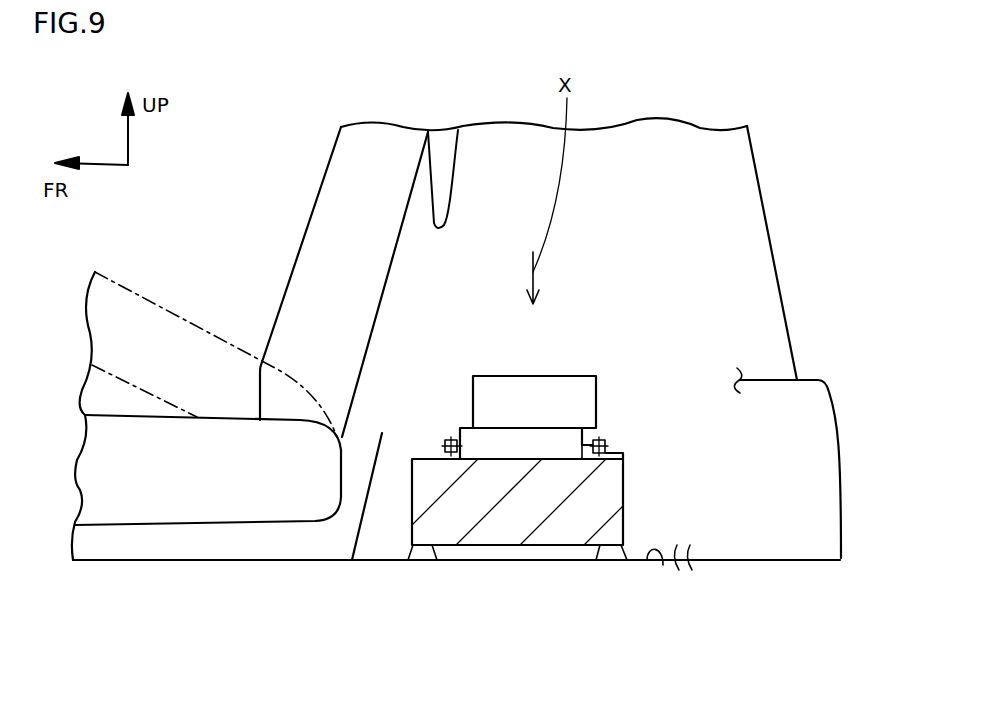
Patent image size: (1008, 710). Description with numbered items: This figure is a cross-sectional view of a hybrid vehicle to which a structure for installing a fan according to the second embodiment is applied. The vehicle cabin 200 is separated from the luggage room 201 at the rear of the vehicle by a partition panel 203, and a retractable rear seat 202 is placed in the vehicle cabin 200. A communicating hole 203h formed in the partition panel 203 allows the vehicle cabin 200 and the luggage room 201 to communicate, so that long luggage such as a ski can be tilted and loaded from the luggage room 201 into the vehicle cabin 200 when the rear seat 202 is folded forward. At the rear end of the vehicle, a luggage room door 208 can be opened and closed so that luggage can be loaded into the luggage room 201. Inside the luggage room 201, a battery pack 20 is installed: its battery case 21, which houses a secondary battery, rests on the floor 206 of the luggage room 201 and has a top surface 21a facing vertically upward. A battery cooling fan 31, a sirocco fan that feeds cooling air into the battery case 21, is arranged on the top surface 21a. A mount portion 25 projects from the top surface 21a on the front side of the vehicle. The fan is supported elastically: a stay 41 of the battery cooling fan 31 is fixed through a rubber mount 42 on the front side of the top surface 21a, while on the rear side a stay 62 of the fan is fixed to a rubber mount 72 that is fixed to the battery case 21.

The vehicle cabin 200 is at (242, 172).
The luggage room 201 is at (690, 288).
The rear seat 202 is at (323, 250).
The partition panel 203 is at (443, 188).
The communicating hole 203h is at (447, 223).
The luggage room door 208 is at (765, 217).
The battery pack 20 is at (658, 502).
The battery case 21 is at (412, 517).
The top surface 21a is at (508, 460).
The mount portion 25 is at (615, 456).
The battery cooling fan 31 is at (562, 392).
The stay 41 is at (452, 432).
The rubber mount 42 is at (458, 459).
The stay 62 is at (588, 452).
The rubber mount 72 is at (605, 443).
The floor 206 is at (663, 565).